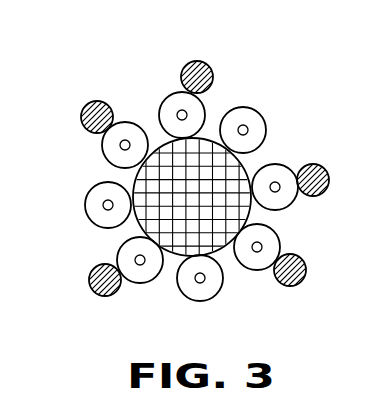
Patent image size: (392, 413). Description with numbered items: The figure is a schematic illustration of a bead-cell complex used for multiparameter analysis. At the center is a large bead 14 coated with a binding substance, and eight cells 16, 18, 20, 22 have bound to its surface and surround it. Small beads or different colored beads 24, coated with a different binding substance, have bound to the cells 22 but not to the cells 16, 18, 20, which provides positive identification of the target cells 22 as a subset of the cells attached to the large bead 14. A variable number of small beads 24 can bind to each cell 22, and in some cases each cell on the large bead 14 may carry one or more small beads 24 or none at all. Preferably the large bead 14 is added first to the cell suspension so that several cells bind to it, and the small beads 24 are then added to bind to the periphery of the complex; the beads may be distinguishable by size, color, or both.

The large bead 14 is at (260, 165).
The cell 16 is at (258, 105).
The cell 18 is at (85, 202).
The cell 20 is at (203, 297).
The target cells 22 is at (165, 102).
The small beads 24 is at (85, 107).